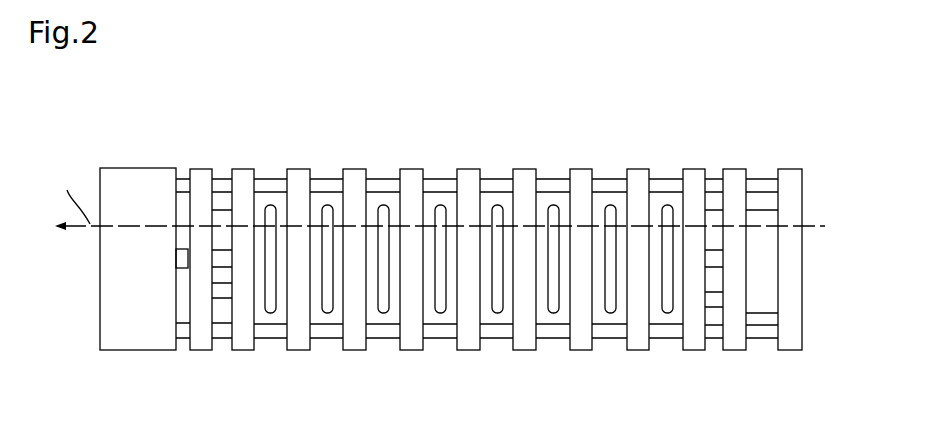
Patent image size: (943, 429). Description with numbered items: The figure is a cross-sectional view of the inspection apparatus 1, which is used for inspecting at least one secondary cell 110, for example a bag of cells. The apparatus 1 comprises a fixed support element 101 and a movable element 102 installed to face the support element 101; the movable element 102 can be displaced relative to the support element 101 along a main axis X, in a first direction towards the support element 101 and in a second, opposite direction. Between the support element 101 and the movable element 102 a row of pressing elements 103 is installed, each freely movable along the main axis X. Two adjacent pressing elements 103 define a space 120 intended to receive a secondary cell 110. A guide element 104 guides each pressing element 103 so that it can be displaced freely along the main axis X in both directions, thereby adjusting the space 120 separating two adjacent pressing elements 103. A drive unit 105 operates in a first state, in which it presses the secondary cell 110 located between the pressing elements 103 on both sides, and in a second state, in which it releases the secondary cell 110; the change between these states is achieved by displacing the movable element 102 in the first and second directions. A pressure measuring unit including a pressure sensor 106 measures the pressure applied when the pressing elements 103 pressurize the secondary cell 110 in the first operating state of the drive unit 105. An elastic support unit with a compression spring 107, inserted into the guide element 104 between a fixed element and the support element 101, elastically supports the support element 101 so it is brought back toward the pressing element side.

The inspection apparatus 1 is at (126, 136).
The support element 101 is at (803, 263).
The movable element 102 is at (207, 350).
The pressing elements 103 is at (417, 168).
The guide element 104 is at (663, 176).
The drive unit 105 is at (99, 265).
The pressure sensor 106 is at (758, 205).
The compression spring 107 is at (221, 206).
The secondary cell 110 is at (385, 322).
The space 120 is at (394, 203).